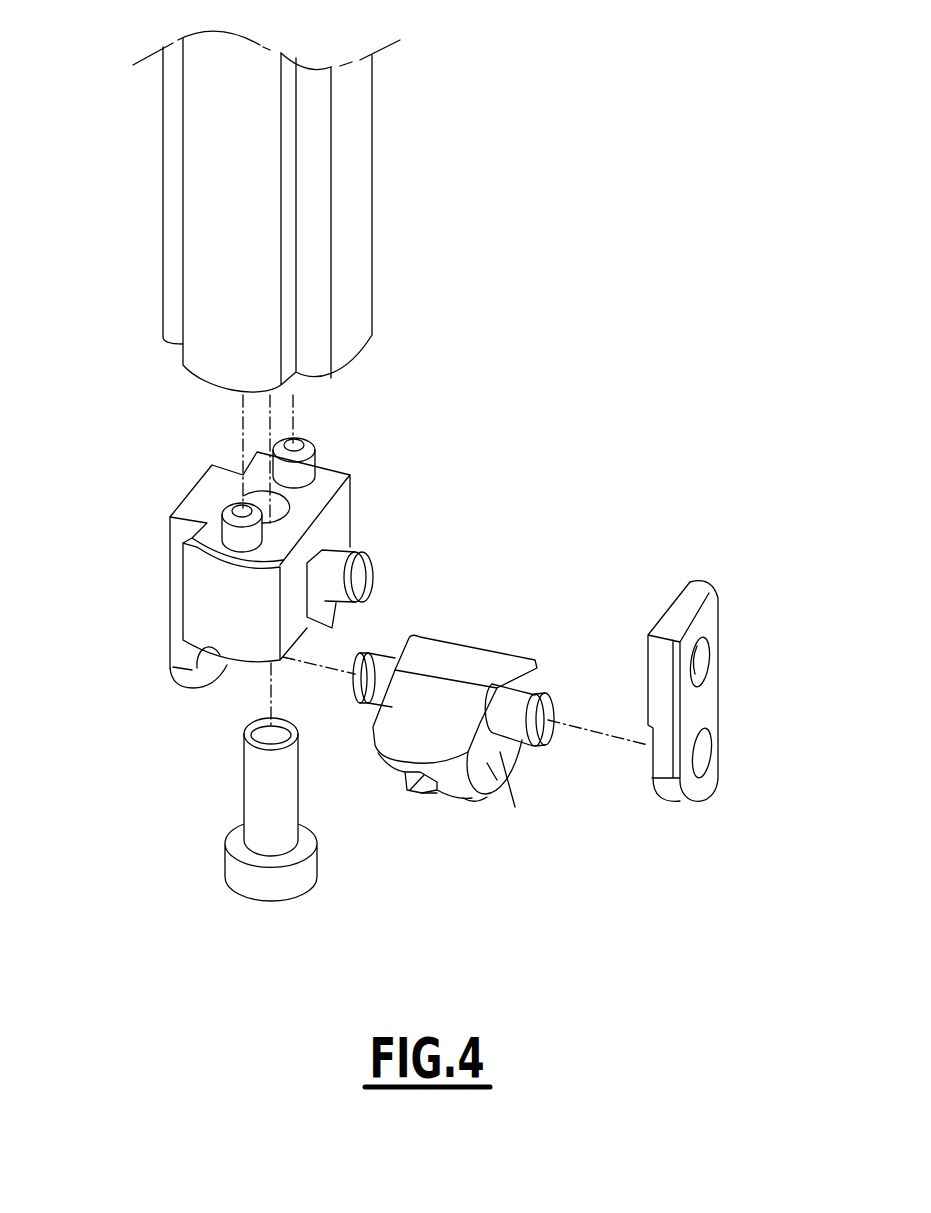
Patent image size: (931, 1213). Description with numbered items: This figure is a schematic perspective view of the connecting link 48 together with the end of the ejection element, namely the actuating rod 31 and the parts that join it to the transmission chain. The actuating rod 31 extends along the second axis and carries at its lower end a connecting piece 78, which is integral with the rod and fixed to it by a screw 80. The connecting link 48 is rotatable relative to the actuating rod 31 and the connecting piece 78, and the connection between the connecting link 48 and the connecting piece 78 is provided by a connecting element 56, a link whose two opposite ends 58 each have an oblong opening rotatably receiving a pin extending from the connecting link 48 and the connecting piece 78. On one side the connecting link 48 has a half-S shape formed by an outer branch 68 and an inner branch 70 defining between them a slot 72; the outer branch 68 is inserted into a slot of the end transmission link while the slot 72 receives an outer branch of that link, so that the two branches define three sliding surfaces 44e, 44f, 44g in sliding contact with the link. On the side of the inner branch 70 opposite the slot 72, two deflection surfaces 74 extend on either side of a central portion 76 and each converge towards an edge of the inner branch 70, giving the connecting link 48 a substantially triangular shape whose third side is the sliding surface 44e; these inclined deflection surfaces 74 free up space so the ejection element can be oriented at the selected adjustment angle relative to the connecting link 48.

The actuating rod 31 is at (348, 280).
The connecting piece 78 is at (205, 603).
The screw 80 is at (260, 782).
The deflection surfaces 74 is at (465, 640).
The central portion 76 is at (478, 668).
The connecting link 48 is at (500, 752).
The sliding surface 44e is at (398, 767).
The inner branch 70 is at (403, 796).
The slot 72 is at (422, 790).
The sliding surface 44f is at (425, 792).
The outer branch 68 is at (447, 795).
The sliding surface 44g is at (463, 798).
The connecting element 56 is at (702, 703).
The ends 58 is at (693, 787).